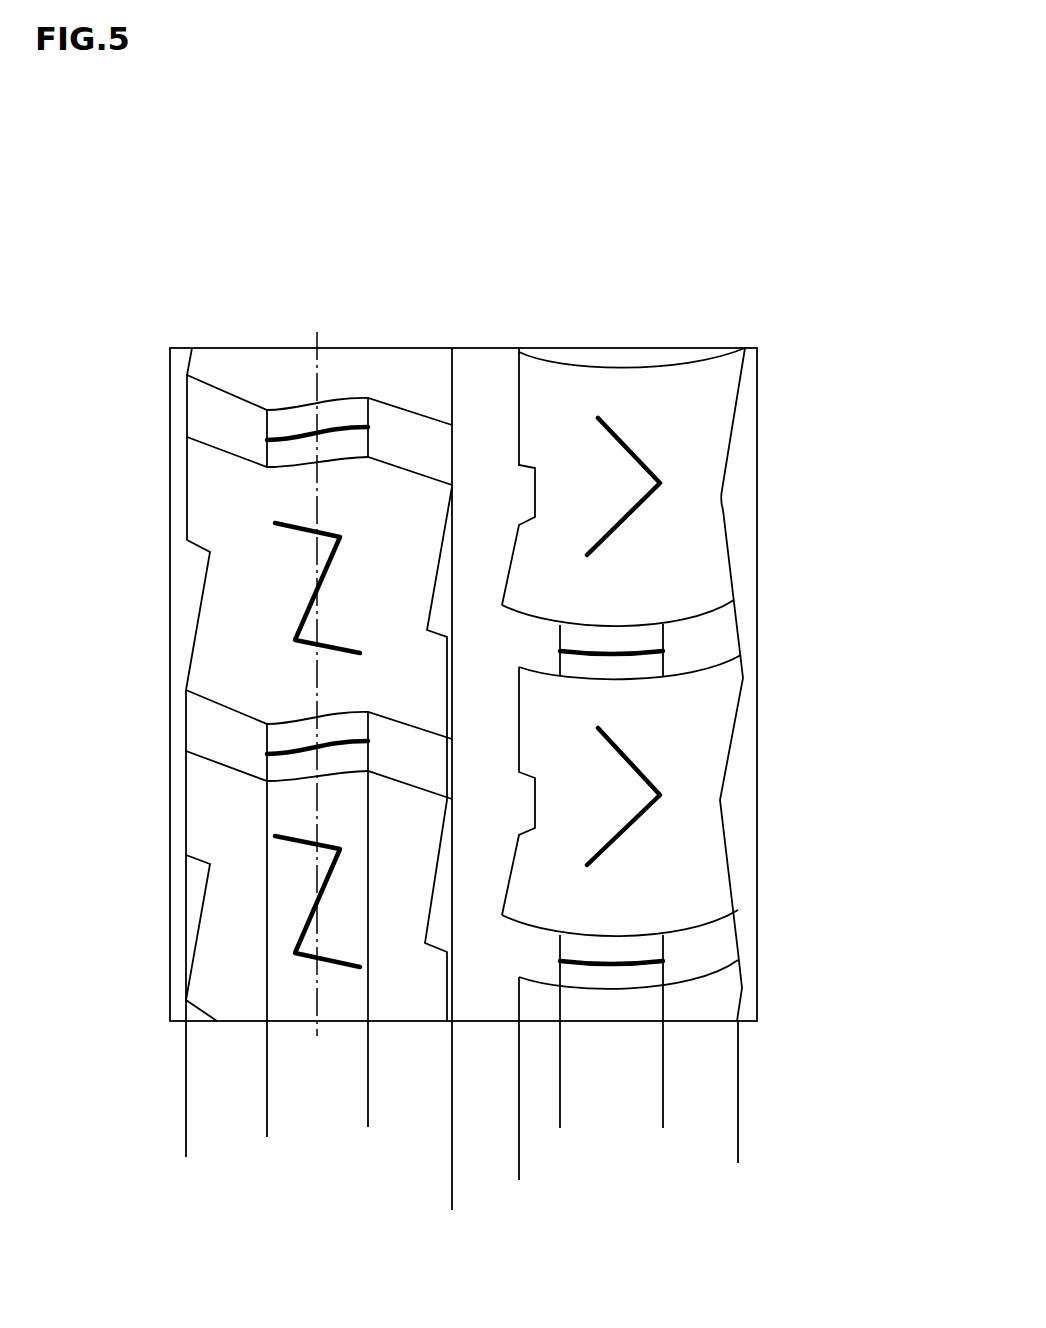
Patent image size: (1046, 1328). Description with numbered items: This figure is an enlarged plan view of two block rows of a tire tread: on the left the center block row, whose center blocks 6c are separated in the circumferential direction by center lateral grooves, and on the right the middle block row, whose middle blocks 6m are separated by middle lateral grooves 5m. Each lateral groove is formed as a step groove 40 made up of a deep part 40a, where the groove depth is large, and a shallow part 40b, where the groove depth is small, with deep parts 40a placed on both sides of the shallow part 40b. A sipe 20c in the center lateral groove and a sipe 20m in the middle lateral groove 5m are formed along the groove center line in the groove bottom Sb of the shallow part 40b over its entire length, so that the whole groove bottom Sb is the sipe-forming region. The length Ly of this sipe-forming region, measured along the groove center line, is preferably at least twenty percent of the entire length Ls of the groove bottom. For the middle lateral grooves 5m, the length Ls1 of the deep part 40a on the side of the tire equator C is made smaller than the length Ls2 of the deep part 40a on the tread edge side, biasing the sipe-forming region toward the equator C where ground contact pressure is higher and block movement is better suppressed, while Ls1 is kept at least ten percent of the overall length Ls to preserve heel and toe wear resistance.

The step groove 40 is at (420, 247).
The deep part 40a is at (230, 413).
The shallow part 40b is at (305, 418).
The groove bottom of the shallow part Sb is at (343, 410).
The sipe 20c is at (298, 447).
The center block 6c is at (260, 659).
The middle block 6m is at (670, 593).
The middle lateral groove 5m is at (722, 637).
The sipe 20m is at (622, 962).
The tire equator C is at (317, 1036).
The length of the sipe-forming region Ly is at (368, 1121).
The entire length of the groove bottom Ls is at (452, 1203).
The length of the deep part on the equator side Ls1 is at (560, 1127).
The length of the deep part on the tread edge side Ls2 is at (738, 1102).